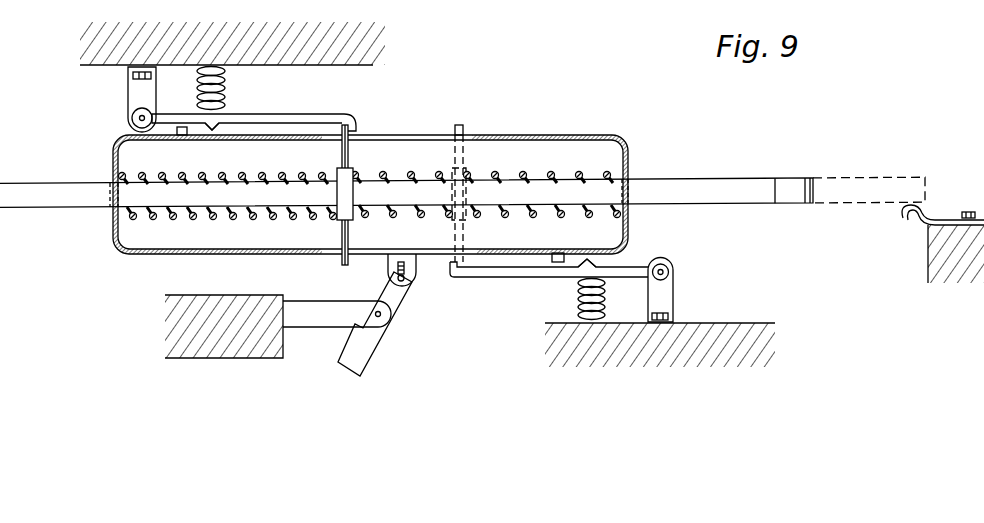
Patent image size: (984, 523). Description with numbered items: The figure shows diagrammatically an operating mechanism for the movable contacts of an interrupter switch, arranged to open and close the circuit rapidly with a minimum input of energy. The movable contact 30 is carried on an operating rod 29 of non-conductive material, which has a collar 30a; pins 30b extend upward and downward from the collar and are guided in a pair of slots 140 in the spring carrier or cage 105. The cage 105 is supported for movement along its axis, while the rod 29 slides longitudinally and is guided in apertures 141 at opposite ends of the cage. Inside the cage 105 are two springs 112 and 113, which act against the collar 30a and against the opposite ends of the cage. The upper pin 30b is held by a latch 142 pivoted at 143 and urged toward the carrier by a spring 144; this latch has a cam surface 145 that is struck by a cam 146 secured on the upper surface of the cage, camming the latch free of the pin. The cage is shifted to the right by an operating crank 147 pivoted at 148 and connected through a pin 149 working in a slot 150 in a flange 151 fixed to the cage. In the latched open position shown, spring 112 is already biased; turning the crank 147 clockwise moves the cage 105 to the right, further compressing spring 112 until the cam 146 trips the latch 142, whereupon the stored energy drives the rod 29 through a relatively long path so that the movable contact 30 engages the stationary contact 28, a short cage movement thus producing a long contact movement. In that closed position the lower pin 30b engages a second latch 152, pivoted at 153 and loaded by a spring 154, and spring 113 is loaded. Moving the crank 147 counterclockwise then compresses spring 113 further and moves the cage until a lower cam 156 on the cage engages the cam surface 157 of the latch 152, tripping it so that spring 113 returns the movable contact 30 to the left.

The stationary contact 28 is at (930, 214).
The operating rod 29 is at (735, 183).
The movable contact 30 is at (800, 183).
The collar 30a is at (345, 190).
The pins 30b is at (358, 133).
The spring carrier or cage 105 is at (588, 137).
The spring 112 is at (162, 219).
The spring 113 is at (556, 175).
The slots 140 is at (463, 127).
The apertures 141 is at (113, 184).
The latch 142 is at (318, 113).
The pivot 143 is at (130, 120).
The spring 144 is at (225, 84).
The cam surface 145 is at (215, 128).
The cam 146 is at (185, 136).
The operating crank or crank arm 147 is at (360, 360).
The pivot 148 is at (374, 315).
The pin 149 is at (395, 278).
The slot 150 is at (406, 268).
The flange 151 is at (408, 290).
The latch 152 is at (505, 278).
The pivot 153 is at (673, 272).
The spring 154 is at (580, 295).
The lower cam 156 is at (557, 252).
The cam surface 157 is at (592, 265).